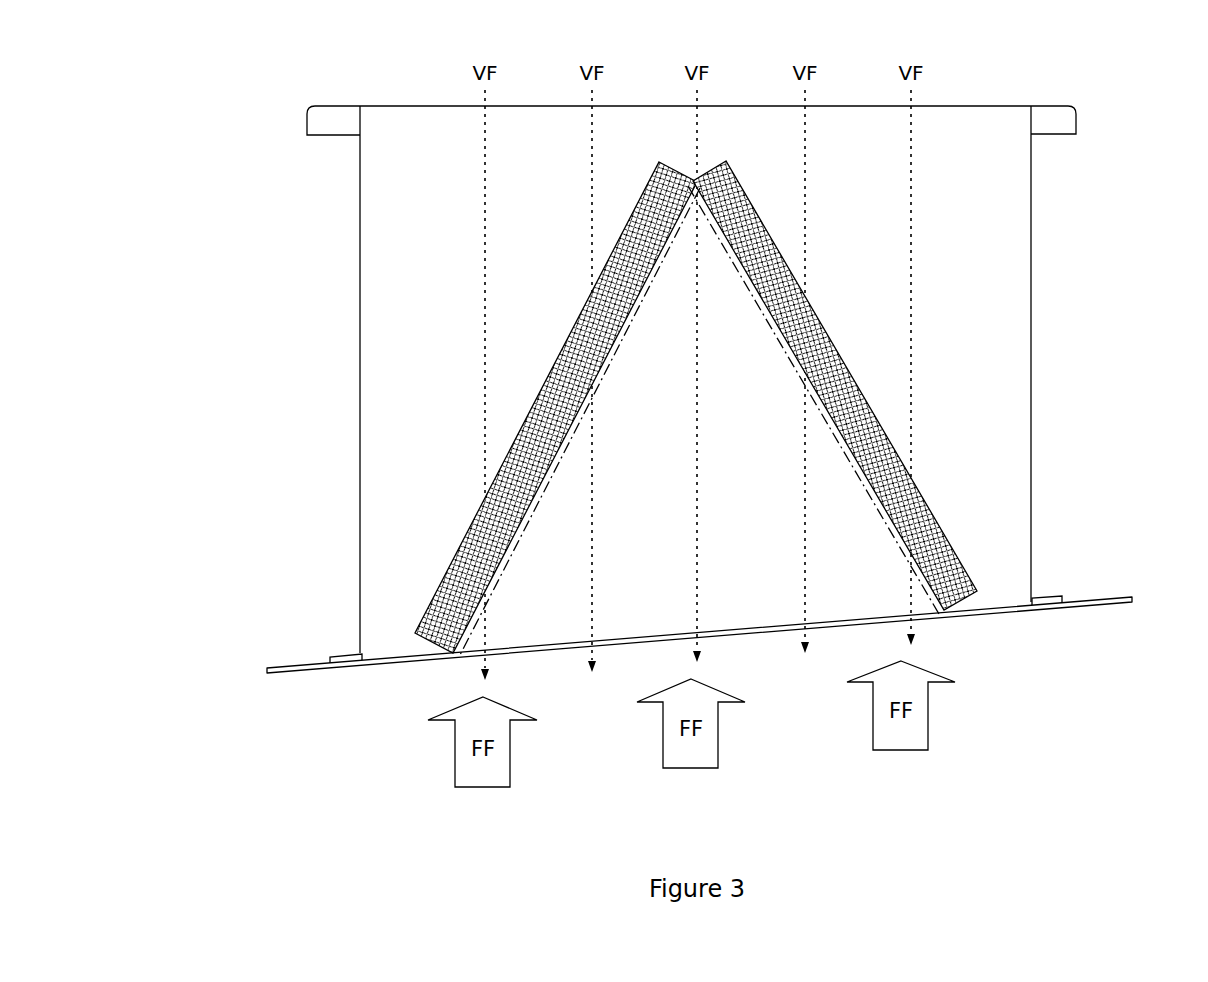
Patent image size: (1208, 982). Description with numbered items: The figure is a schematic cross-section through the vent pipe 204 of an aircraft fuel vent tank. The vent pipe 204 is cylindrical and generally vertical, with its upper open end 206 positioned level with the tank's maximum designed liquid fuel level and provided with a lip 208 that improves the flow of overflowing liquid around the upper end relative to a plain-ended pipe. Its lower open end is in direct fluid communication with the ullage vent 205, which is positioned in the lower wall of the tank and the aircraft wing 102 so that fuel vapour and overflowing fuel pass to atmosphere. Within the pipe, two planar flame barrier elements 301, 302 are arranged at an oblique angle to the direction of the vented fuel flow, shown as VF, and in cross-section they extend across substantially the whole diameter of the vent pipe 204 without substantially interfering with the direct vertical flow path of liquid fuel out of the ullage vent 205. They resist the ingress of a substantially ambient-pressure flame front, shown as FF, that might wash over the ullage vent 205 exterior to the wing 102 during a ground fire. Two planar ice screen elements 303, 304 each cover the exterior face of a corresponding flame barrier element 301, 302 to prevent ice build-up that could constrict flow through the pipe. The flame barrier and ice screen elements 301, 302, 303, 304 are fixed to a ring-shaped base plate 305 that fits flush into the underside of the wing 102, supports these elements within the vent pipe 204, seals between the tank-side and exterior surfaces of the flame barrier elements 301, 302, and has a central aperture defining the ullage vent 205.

The aircraft wing 102 is at (288, 665).
The vent pipe 204 is at (360, 413).
The ullage vent 205 is at (907, 620).
The upper open end 206 is at (972, 106).
The lip 208 is at (316, 134).
The flame barrier element 301 is at (543, 379).
The flame barrier element 302 is at (860, 383).
The ice screen element 303 is at (520, 515).
The ice screen element 304 is at (870, 487).
The base plate 305 is at (395, 662).